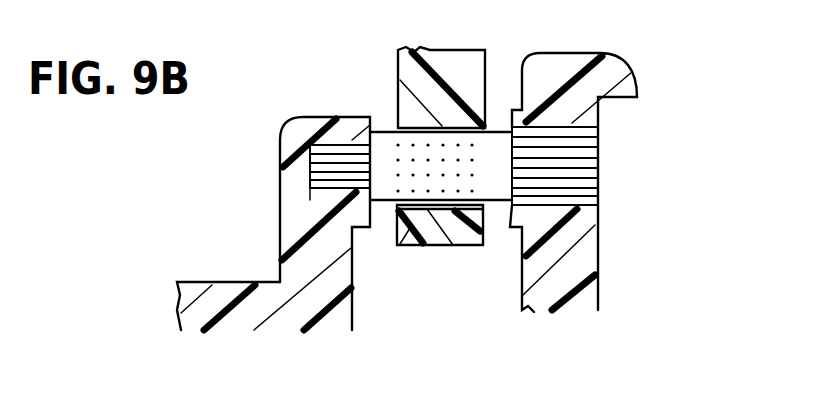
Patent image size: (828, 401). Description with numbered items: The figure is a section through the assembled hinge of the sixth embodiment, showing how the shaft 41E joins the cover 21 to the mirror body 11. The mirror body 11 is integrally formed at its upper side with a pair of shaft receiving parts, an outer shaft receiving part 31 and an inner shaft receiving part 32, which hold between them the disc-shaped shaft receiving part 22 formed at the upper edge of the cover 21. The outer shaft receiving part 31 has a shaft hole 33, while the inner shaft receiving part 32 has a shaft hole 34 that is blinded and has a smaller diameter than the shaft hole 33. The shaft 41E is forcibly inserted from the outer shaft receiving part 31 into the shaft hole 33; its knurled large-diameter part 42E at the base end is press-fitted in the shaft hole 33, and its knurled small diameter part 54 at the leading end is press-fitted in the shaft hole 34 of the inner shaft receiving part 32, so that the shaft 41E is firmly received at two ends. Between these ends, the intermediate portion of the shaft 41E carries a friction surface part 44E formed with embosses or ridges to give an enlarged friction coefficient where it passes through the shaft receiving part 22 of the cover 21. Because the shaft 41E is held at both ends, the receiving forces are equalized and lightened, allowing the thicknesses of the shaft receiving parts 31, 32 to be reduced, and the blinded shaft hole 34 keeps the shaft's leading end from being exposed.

The mirror body 11 is at (590, 295).
The cover 21 is at (462, 52).
The shaft receiving part 22 is at (404, 232).
The outer shaft receiving part 31 is at (578, 103).
The inner shaft receiving part 32 is at (310, 136).
The shaft hole 33 is at (565, 200).
The shaft hole 34 is at (312, 163).
The shaft 41E is at (600, 166).
The large-diameter part 42E is at (533, 135).
The friction surface part 44E is at (435, 180).
The small diameter part 54 is at (317, 188).